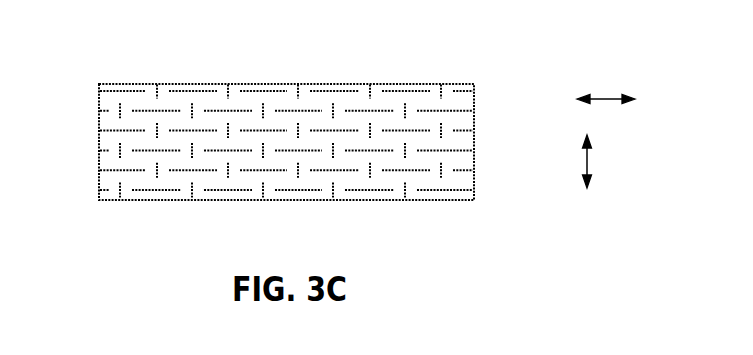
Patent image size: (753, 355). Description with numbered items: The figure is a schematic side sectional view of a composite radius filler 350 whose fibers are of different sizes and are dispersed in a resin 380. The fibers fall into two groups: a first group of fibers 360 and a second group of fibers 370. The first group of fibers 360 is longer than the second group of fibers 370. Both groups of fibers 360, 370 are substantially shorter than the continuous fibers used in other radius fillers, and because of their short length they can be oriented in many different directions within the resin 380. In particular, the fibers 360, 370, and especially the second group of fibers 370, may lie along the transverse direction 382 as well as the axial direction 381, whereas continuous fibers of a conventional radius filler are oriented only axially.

The composite radius filler 350 is at (274, 71).
The first group of fibers 360 is at (150, 109).
The second group of fibers 370 is at (262, 110).
The resin 380 is at (465, 178).
The axial direction 381 is at (607, 97).
The transverse direction 382 is at (590, 161).